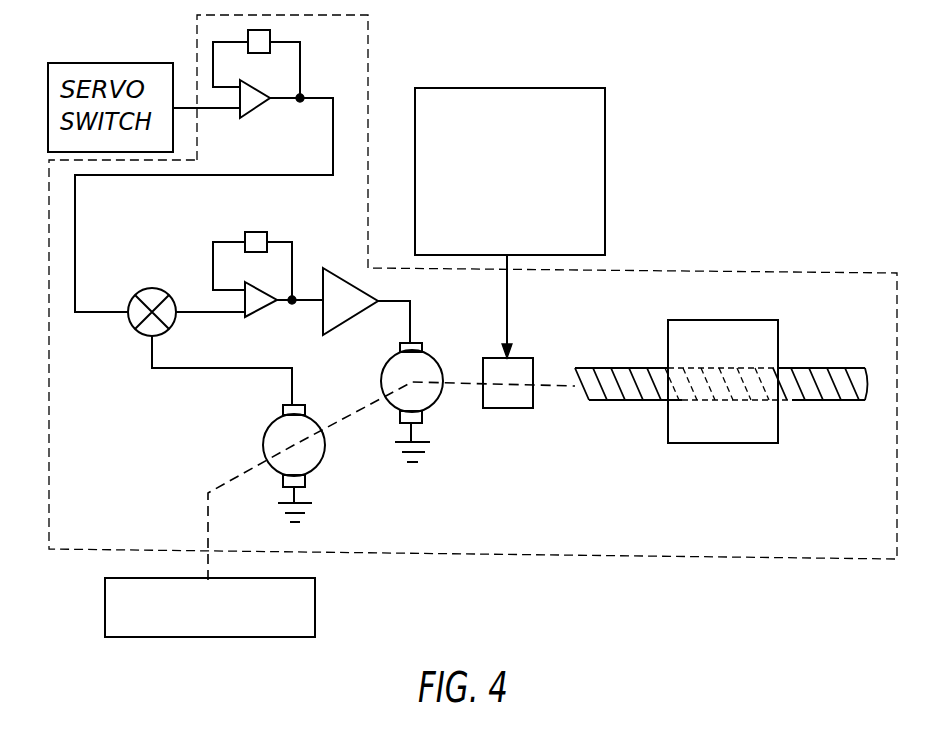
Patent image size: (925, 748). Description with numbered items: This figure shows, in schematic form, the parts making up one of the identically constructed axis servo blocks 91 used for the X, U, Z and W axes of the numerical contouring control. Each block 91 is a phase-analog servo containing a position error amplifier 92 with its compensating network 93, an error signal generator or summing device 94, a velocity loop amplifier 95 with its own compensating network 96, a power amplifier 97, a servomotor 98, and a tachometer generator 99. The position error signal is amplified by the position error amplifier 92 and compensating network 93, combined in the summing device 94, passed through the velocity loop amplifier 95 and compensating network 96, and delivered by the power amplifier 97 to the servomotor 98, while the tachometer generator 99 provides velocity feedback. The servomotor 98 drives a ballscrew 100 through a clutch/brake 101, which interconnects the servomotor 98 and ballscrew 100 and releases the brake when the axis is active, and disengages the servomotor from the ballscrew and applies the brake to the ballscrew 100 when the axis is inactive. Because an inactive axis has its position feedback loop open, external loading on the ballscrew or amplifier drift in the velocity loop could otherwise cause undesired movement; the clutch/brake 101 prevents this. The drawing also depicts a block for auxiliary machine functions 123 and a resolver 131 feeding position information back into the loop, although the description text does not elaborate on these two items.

The axis servo block 91 is at (685, 271).
The position error amplifier 92 is at (250, 96).
The compensating network 93 is at (270, 32).
The error signal generator 94 is at (152, 288).
The velocity loop amplifier 95 is at (272, 285).
The compensating network 96 is at (288, 218).
The power amplifier 97 is at (347, 307).
The servomotor 98 is at (427, 373).
The tachometer generator 99 is at (325, 448).
The ballscrew 100 is at (764, 312).
The clutch/brake 101 is at (523, 360).
The auxiliary machine functions 123 is at (508, 88).
The resolver 131 is at (290, 598).